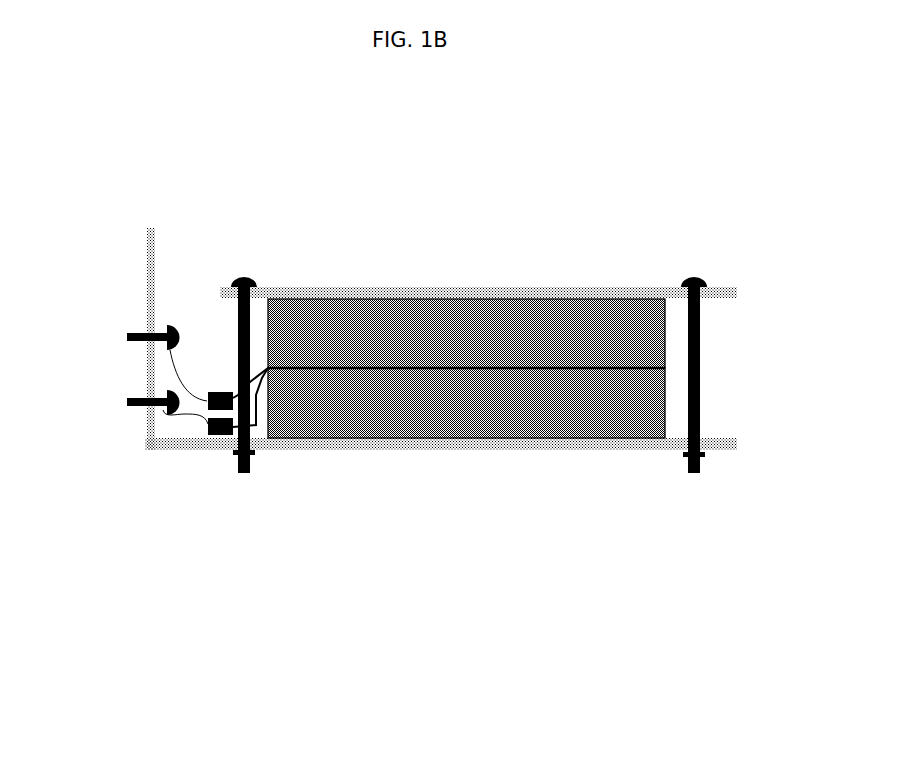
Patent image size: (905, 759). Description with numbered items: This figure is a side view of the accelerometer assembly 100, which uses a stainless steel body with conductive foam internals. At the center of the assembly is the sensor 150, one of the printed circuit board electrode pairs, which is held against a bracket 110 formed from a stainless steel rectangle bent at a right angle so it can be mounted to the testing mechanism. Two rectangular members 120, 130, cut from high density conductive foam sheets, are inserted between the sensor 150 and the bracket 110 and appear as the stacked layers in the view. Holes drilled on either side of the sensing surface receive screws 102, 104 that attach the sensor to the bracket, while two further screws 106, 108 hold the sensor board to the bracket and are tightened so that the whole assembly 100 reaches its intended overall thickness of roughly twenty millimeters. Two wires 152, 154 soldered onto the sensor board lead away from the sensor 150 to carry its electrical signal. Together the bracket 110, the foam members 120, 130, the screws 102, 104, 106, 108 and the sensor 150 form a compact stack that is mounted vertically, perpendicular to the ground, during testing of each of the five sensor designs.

The accelerometer assembly 100 is at (440, 542).
The screw 102 is at (140, 336).
The screw 104 is at (127, 399).
The screw 106 is at (252, 278).
The screw 108 is at (702, 278).
The bracket 110 is at (200, 452).
The rectangular member 120 is at (668, 333).
The rectangular member 130 is at (668, 413).
The sensor 150 is at (455, 372).
The wire 152 is at (202, 401).
The wire 154 is at (198, 410).